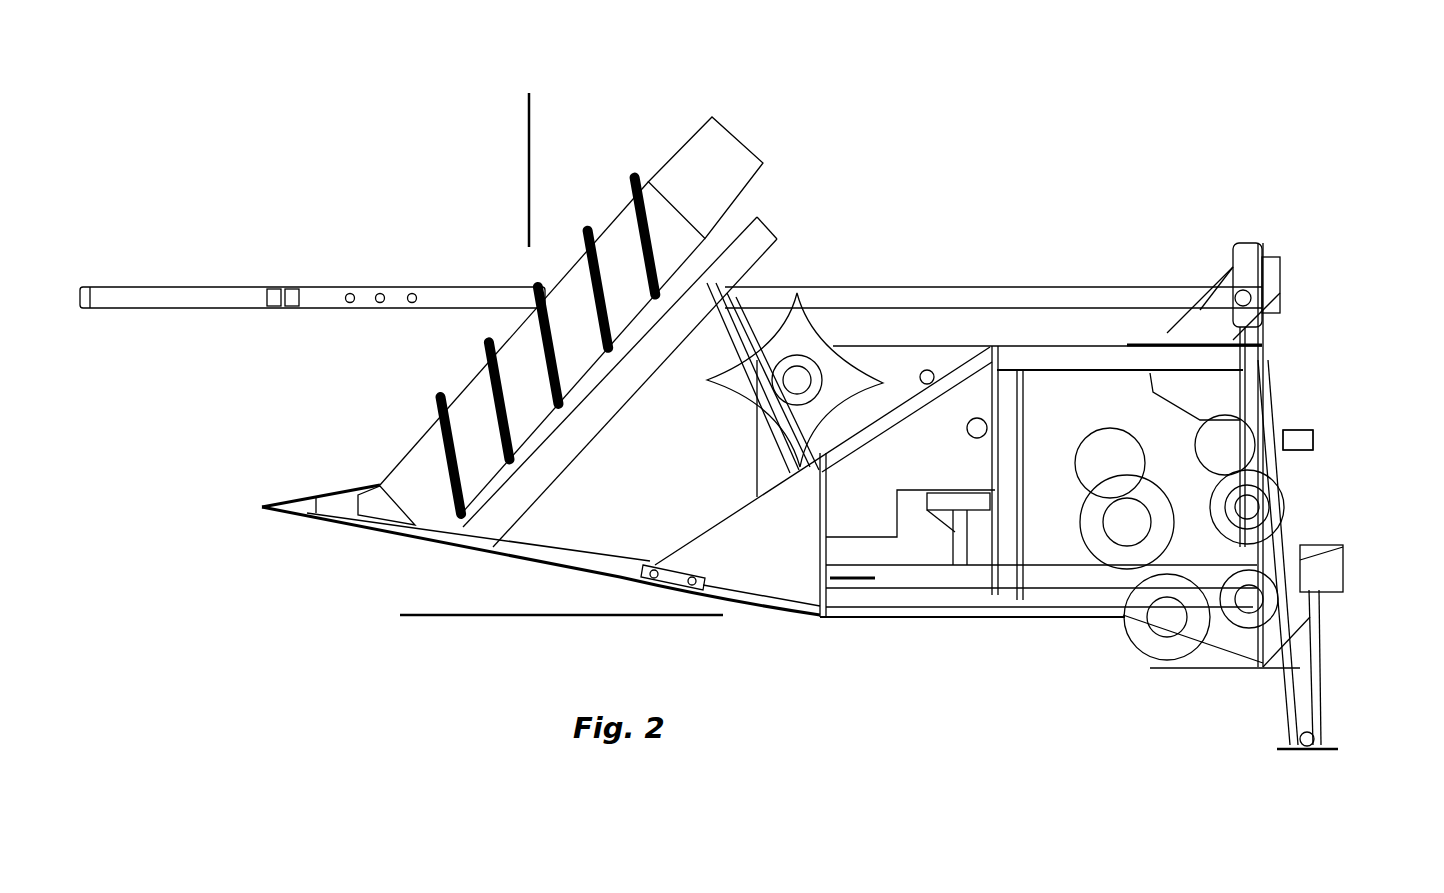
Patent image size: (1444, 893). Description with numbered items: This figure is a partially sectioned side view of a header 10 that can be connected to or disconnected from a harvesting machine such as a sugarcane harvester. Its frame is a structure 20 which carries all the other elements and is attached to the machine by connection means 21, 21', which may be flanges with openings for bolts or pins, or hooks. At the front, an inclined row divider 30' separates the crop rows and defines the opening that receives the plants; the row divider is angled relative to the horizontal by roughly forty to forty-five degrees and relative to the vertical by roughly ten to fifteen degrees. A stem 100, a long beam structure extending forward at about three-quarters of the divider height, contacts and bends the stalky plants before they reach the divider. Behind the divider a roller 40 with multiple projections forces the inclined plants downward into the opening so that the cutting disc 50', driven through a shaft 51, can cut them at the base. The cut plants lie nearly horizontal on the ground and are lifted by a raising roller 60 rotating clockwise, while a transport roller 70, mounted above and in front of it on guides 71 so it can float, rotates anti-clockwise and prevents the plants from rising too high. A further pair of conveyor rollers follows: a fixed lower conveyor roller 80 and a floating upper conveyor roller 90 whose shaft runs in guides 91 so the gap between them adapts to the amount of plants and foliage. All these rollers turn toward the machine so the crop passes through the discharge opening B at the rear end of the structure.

The header 10 is at (962, 91).
The stem 100 is at (300, 262).
The row divider 30' is at (519, 332).
The roller 40 is at (780, 385).
The cutting disc 50' is at (627, 521).
The shaft 51 is at (963, 547).
The structure 20 is at (1057, 360).
The connection means 21 is at (1282, 302).
The connection means 21' is at (1337, 535).
The discharge opening B is at (1318, 528).
The guides 71 is at (1097, 437).
The transport roller 70 is at (1117, 533).
The guides 91 is at (1260, 440).
The upper conveyor roller 90 is at (1247, 507).
The raising roller 60 is at (1177, 628).
The lower conveyor roller 80 is at (1262, 617).